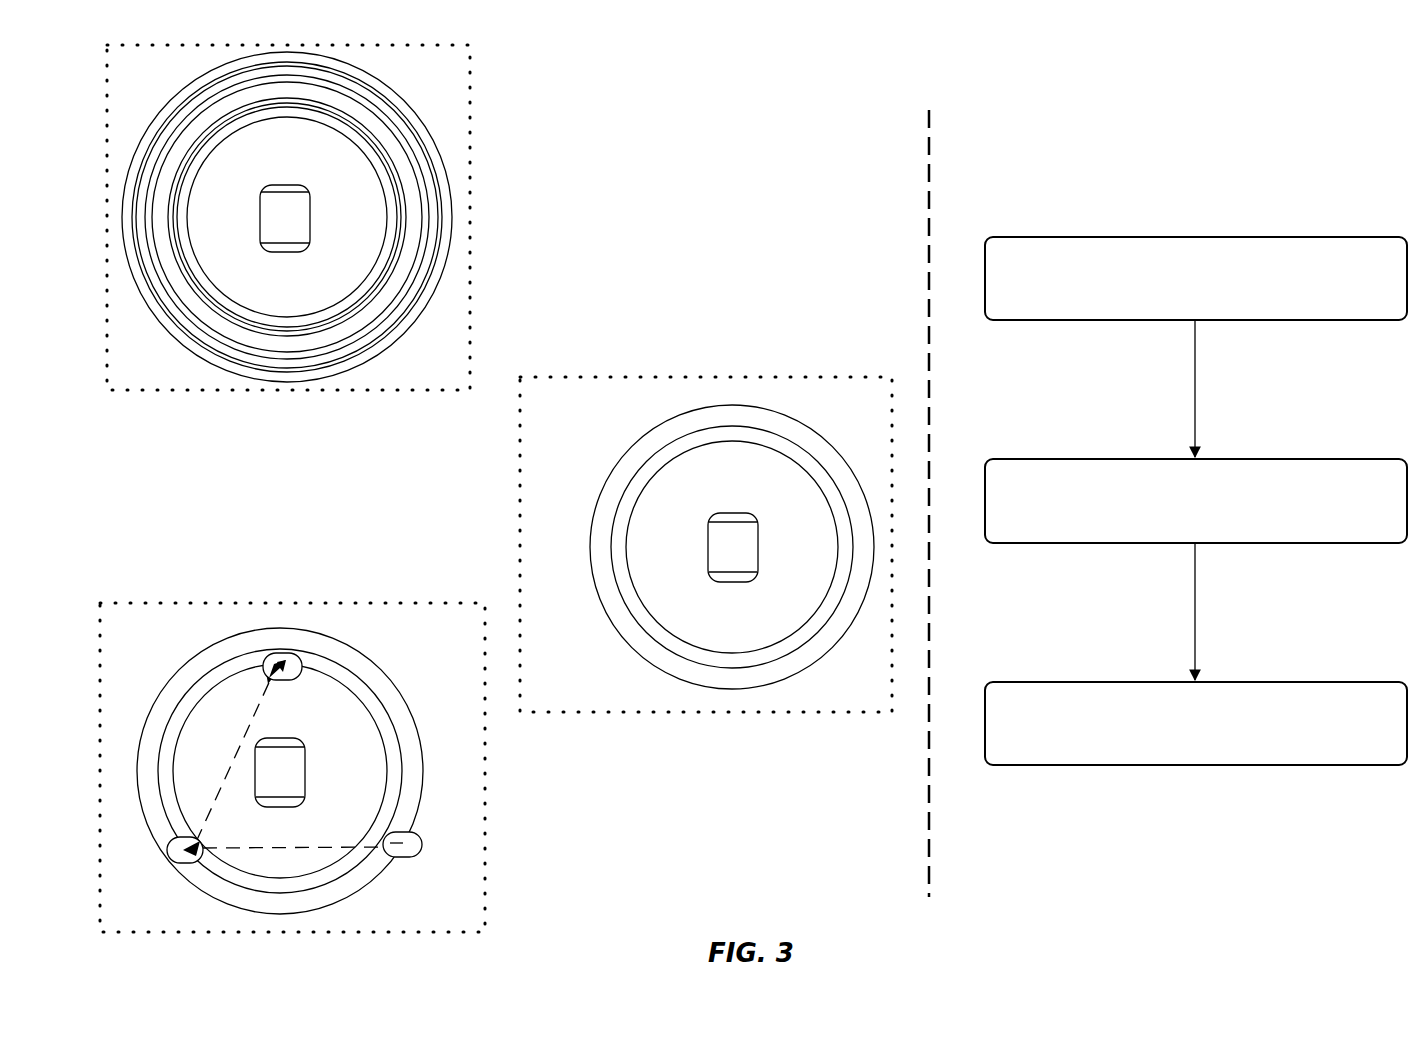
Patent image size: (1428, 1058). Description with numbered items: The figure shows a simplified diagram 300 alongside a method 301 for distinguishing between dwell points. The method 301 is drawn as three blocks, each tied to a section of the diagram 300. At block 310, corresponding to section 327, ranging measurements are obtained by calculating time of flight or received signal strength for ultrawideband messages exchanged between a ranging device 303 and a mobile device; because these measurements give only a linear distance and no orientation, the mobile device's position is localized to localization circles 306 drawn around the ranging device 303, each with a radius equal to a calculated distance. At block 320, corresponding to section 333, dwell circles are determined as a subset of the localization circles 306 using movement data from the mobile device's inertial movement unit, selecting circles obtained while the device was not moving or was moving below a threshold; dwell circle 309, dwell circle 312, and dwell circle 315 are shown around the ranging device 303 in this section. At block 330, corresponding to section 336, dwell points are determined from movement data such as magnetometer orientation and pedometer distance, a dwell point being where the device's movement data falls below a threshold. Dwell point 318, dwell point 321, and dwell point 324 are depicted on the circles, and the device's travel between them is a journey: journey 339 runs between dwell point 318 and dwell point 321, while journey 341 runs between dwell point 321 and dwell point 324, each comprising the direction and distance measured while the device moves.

The diagram 300 is at (797, 893).
The method 301 is at (1318, 75).
The ranging device 303 is at (268, 190).
The localization circles 306 is at (213, 327).
The dwell circle 309 is at (612, 476).
The block 310 is at (1196, 278).
The dwell circle 312 is at (612, 548).
The dwell circle 315 is at (833, 583).
The dwell point 318 is at (422, 845).
The block 320 is at (1196, 501).
The dwell point 321 is at (167, 849).
The dwell point 324 is at (272, 681).
The section 327 is at (476, 242).
The block 330 is at (1196, 723).
The section 333 is at (520, 483).
The section 336 is at (486, 812).
The journey 339 is at (290, 847).
The journey 341 is at (257, 713).